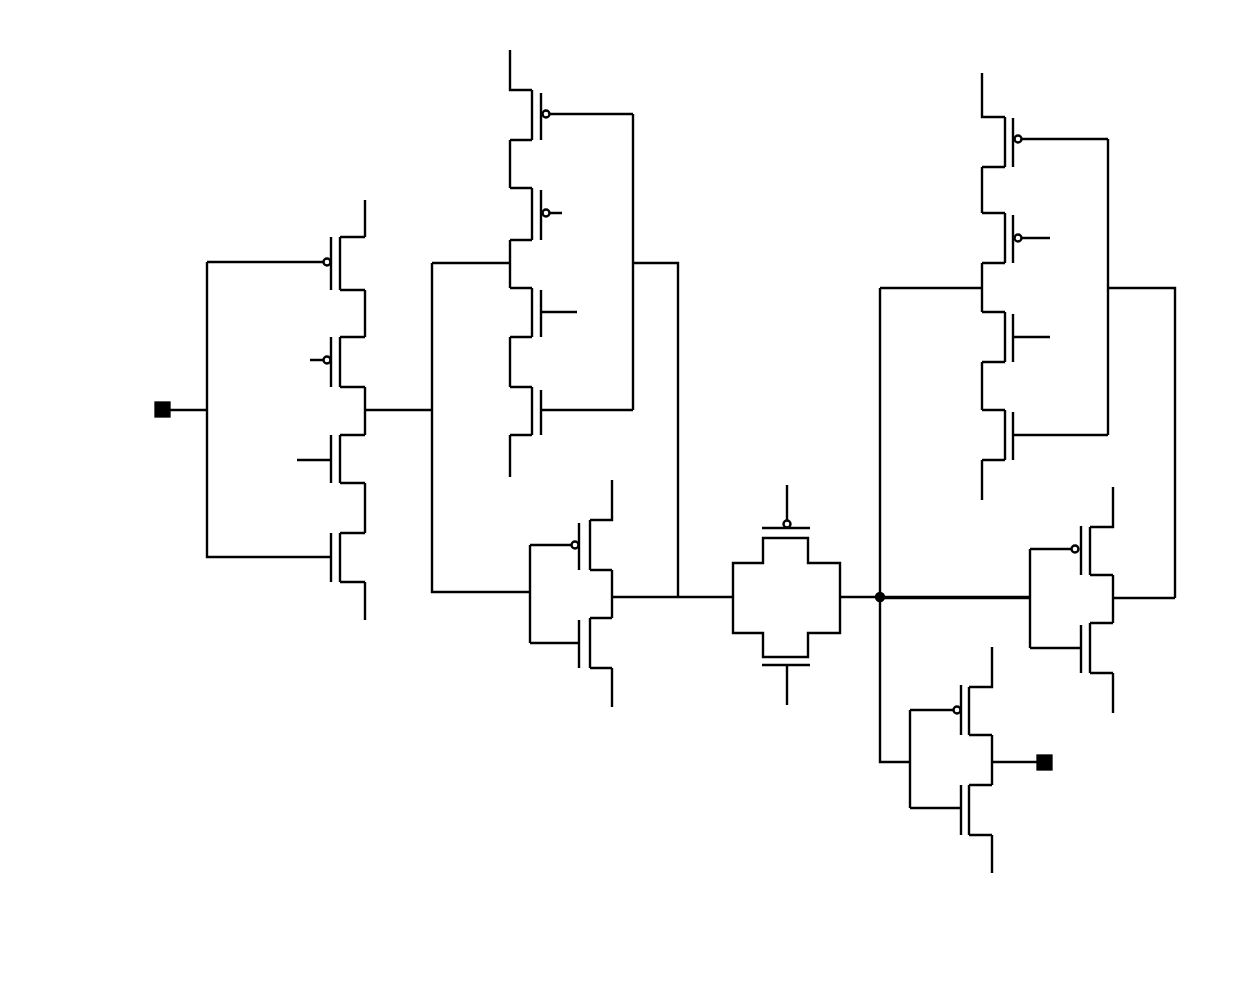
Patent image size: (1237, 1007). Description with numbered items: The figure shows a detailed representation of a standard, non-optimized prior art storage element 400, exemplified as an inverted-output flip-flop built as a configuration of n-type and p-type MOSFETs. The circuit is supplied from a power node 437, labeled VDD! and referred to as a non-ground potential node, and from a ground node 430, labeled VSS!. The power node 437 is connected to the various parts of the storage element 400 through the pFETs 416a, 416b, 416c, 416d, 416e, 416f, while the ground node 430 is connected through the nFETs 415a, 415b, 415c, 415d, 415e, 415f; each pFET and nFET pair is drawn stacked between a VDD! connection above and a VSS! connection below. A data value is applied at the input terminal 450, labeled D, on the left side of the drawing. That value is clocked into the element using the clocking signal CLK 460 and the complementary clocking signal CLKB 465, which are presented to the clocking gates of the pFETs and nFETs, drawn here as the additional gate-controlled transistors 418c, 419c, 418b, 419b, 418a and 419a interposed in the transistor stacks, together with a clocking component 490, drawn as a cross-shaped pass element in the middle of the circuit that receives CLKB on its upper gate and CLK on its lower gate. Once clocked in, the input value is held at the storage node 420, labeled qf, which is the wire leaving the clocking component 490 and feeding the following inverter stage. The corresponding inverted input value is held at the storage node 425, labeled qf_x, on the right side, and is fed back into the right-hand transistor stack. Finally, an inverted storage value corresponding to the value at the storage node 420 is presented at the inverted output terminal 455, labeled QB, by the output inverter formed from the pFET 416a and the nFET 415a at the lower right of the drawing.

The prior art storage element 400 is at (330, 753).
The power node 437 is at (332, 190).
The pFET 416f is at (360, 262).
The PMOS clock transistor 418c is at (355, 365).
The clocking signal CLK 460 is at (297, 340).
The clocking signal CLKB 465 is at (297, 430).
The NMOS clock transistor 419c is at (355, 450).
The nFET 415f is at (355, 560).
The input terminal 450 is at (160, 400).
The pFET 416d is at (519, 108).
The PMOS clock transistor 418b is at (520, 222).
The NMOS clock transistor 419b is at (522, 318).
The nFET 415d is at (522, 408).
The ground node 430 is at (582, 727).
The pFET 416e is at (598, 553).
The nFET 415e is at (598, 640).
The clocking component 490 is at (741, 533).
The pFET 416c is at (995, 158).
The PMOS clock transistor 418a is at (988, 245).
The NMOS clock transistor 419a is at (992, 338).
The nFET 415c is at (990, 445).
The storage node 420 is at (928, 597).
The pFET 416b is at (1100, 558).
The nFET 415b is at (1100, 650).
The storage node 425 is at (1177, 580).
The pFET 416a is at (980, 718).
The nFET 415a is at (980, 808).
The inverted output terminal 455 is at (1048, 770).